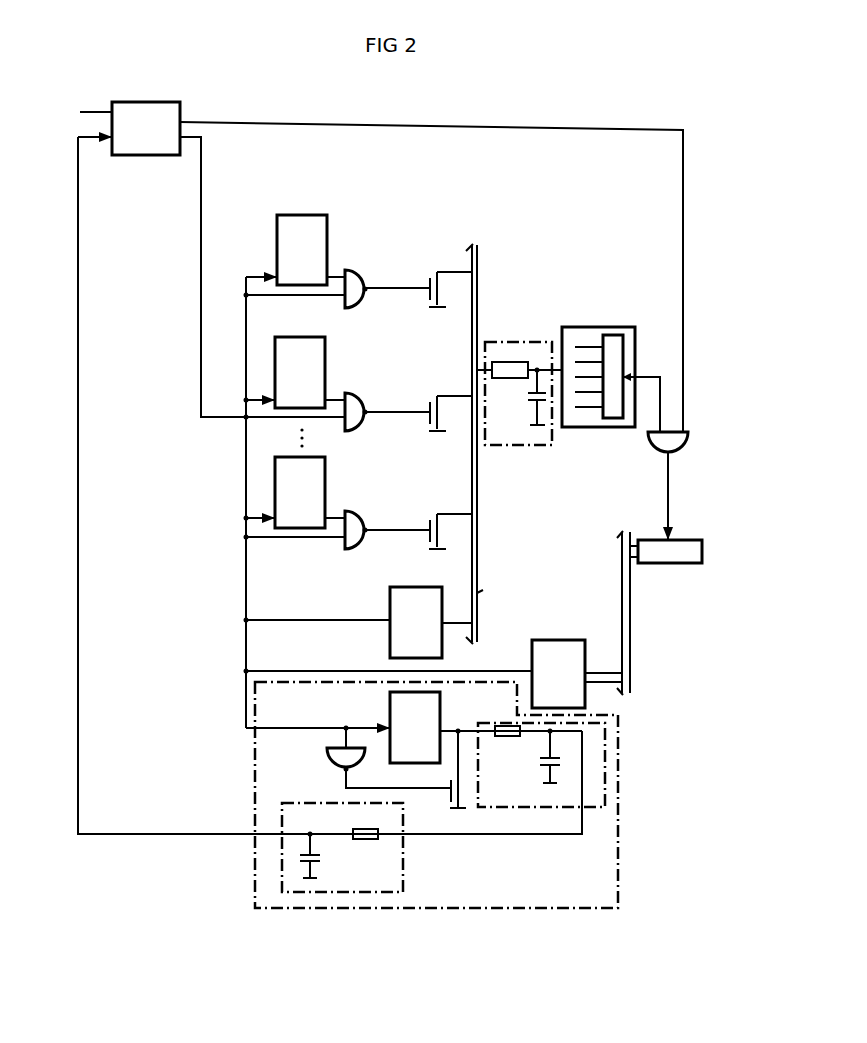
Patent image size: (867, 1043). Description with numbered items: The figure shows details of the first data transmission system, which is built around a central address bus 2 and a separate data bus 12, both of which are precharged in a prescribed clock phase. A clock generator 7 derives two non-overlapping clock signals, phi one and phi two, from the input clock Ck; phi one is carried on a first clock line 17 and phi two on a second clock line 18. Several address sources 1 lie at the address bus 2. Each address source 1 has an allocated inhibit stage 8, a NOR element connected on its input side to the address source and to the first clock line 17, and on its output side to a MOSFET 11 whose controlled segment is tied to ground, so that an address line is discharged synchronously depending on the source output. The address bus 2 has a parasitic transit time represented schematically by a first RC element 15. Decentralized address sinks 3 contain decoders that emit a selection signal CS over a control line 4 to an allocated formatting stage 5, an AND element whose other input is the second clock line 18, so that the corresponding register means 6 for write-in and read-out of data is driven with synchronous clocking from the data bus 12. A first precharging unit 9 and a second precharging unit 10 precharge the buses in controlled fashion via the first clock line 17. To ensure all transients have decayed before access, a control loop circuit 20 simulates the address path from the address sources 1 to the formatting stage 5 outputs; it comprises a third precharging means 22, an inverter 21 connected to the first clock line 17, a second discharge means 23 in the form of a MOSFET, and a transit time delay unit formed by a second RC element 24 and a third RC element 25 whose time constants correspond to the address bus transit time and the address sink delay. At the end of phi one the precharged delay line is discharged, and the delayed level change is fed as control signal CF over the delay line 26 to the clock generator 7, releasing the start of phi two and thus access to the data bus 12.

The address source 1 is at (337, 466).
The address bus 2 is at (478, 310).
The address sink 3 is at (588, 440).
The control line 4 is at (662, 413).
The formatting stage 5 is at (658, 455).
The register means 6 is at (681, 564).
The clock generator 7 is at (203, 80).
The inhibit stage 8 is at (368, 570).
The first precharging unit 9 is at (168, 553).
The second precharging unit 10 is at (565, 648).
The MOSFET 11 is at (418, 422).
The data bus 12 is at (630, 660).
The first RC element 15 is at (505, 447).
The first clock line 17 is at (201, 342).
The second clock line 18 is at (418, 127).
The control loop circuit 20 is at (248, 746).
The inverter 21 is at (328, 758).
The third precharging means 22 is at (155, 653).
The second discharge means 23 is at (443, 777).
The second RC element 24 is at (512, 797).
The third RC element 25 is at (403, 843).
The delay line 26 is at (170, 878).